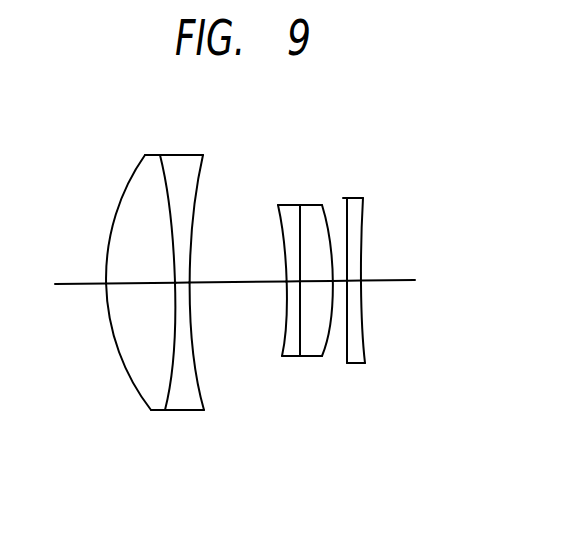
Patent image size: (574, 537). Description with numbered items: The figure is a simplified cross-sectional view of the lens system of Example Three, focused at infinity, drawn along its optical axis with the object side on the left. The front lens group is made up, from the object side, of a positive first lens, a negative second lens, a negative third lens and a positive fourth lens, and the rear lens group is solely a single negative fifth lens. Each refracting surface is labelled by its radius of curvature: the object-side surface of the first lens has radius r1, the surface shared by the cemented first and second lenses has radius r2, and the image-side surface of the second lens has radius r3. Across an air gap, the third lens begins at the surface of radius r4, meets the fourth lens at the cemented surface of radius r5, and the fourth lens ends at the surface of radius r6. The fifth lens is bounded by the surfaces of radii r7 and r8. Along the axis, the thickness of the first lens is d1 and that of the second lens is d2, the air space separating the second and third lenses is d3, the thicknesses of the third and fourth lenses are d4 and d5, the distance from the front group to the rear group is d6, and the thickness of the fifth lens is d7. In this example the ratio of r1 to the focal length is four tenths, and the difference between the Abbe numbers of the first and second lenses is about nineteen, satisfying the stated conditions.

The radius of curvature of the first lens surface r1 is at (147, 155).
The radius of curvature of the second lens surface r2 is at (160, 155).
The radius of curvature of the third lens surface r3 is at (203, 160).
The radius of curvature of the fourth lens surface r4 is at (280, 205).
The radius of curvature of the fifth lens surface r5 is at (300, 205).
The radius of curvature of the sixth lens surface r6 is at (315, 205).
The radius of curvature of the seventh lens surface r7 is at (345, 198).
The radius of curvature of the eighth lens surface r8 is at (363, 198).
The thickness of the first lens d1 is at (140, 285).
The thickness of the second lens d2 is at (178, 284).
The axial distance between the second and third lenses d3 is at (237, 283).
The thickness of the third lens d4 is at (288, 282).
The thickness of the fourth lens d5 is at (313, 281).
The axial distance between the fourth and fifth lenses d6 is at (338, 281).
The thickness of the fifth lens d7 is at (353, 281).